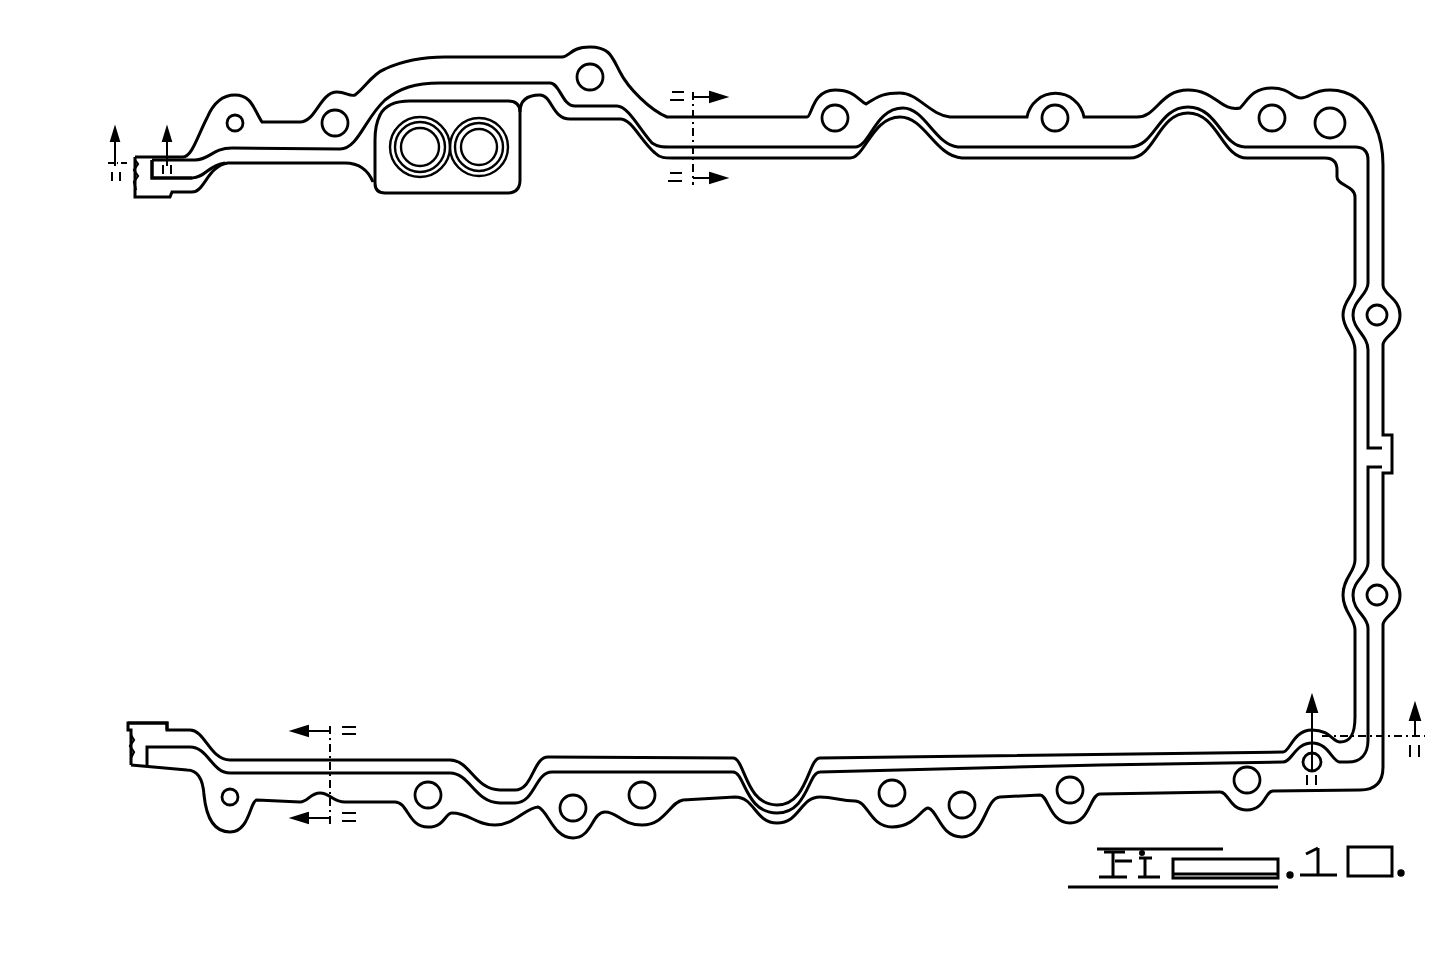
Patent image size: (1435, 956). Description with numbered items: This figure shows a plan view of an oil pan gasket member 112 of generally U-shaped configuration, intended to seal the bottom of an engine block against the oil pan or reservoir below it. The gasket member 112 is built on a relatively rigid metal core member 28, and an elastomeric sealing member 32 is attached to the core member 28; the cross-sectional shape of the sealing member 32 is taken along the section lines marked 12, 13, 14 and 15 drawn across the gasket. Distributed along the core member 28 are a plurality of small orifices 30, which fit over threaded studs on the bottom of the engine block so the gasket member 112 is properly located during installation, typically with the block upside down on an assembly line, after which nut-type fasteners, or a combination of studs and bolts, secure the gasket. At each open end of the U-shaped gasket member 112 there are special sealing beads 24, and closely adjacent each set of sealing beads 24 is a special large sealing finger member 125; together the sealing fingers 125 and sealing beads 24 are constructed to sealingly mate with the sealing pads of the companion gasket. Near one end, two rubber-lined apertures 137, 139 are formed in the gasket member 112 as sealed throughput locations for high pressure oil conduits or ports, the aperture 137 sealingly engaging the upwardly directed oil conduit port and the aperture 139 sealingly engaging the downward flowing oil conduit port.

The gasket member 112 is at (903, 62).
The core member 28 is at (787, 128).
The orifices 30 is at (335, 120).
The sealing member 32 is at (1022, 150).
The sealing finger member 125 is at (166, 200).
The sealing beads 24 is at (136, 185).
The rubber-lined aperture 137 is at (412, 162).
The rubber-lined aperture 139 is at (474, 166).
The section line 12- 12 is at (151, 137).
The section line 13- 13 is at (323, 780).
The section line 14- 14 is at (694, 140).
The section line 15- 15 is at (1346, 723).